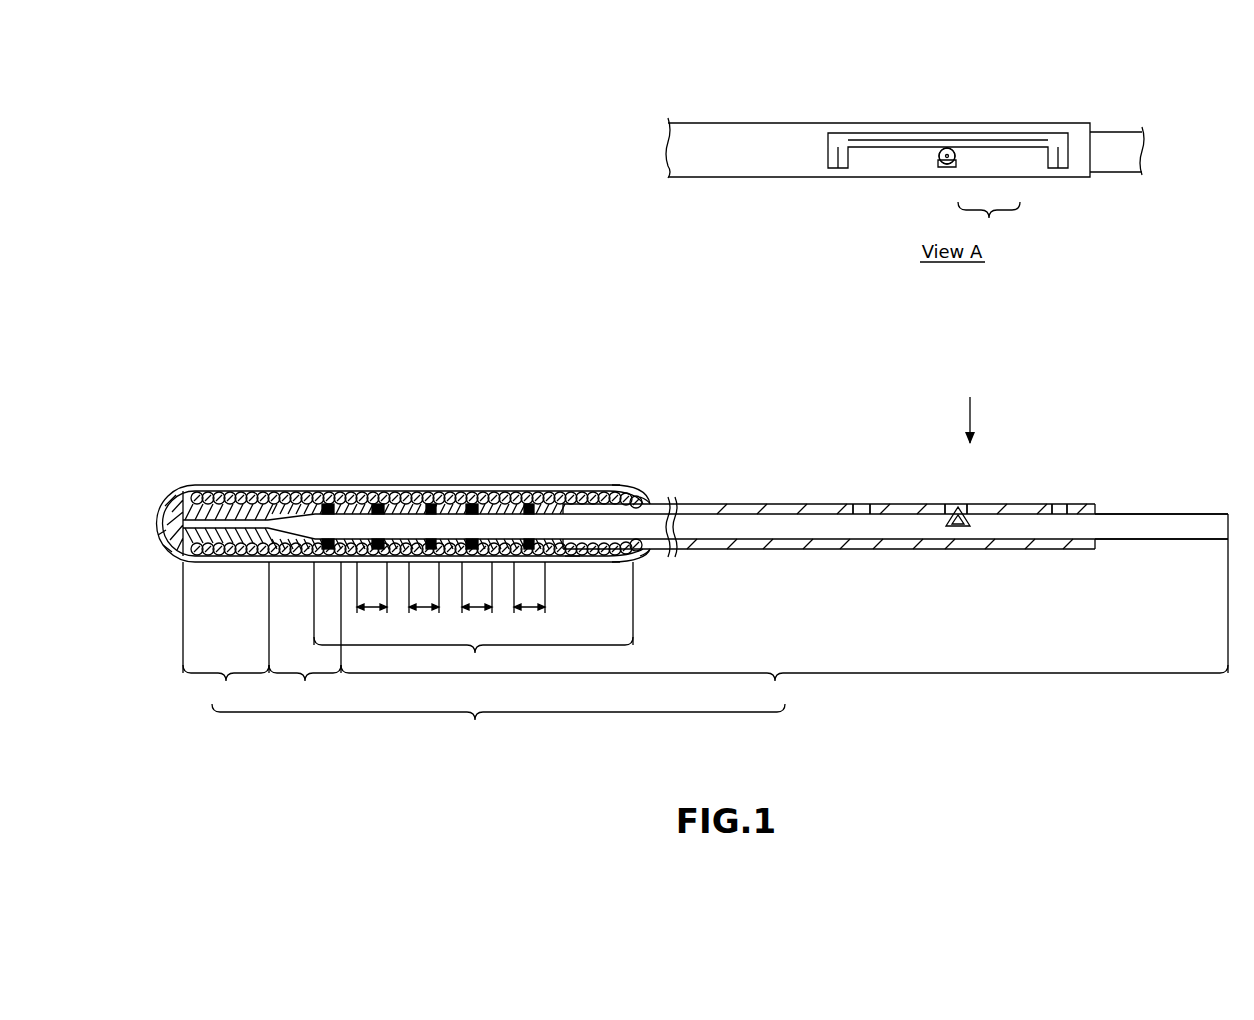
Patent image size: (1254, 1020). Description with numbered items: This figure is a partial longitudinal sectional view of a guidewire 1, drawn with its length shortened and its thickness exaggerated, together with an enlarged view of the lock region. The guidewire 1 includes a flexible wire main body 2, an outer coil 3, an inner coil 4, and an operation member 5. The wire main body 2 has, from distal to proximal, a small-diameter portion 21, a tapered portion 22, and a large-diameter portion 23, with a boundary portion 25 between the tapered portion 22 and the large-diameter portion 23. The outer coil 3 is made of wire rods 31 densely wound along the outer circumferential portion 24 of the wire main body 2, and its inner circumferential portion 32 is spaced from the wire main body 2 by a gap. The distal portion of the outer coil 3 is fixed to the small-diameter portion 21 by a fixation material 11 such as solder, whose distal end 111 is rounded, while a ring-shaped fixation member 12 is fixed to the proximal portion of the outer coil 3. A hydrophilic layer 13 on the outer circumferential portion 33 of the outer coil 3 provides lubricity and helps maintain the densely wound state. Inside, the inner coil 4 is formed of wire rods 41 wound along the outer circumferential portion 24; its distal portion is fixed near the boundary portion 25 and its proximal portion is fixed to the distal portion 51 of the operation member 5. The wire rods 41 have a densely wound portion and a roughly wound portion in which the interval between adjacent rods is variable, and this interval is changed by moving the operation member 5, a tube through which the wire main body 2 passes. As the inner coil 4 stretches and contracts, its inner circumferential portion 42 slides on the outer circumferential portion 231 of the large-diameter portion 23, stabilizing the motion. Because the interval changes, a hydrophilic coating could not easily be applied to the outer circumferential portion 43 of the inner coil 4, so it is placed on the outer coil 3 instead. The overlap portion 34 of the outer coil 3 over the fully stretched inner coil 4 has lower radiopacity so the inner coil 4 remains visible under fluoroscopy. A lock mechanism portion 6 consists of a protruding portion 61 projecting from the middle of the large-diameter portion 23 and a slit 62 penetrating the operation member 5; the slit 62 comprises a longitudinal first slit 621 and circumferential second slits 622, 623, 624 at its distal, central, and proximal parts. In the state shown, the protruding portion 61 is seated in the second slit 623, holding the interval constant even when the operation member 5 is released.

The guidewire 1 is at (1090, 388).
The wire main body 2 is at (1146, 92).
The outer coil 3 is at (563, 484).
The inner coil 4 is at (493, 490).
The operation member 5 is at (1090, 503).
The lock mechanism portion 6 is at (1015, 451).
The fixation material 11 is at (183, 497).
The fixation member 12 is at (636, 498).
The hydrophilic layer 13 is at (606, 490).
The small-diameter portion 21 is at (226, 632).
The tapered portion 22 is at (305, 684).
The large-diameter portion 23 is at (784, 601).
The outer circumferential portion of the wire main body 24 is at (524, 492).
The boundary portion 25 is at (338, 562).
The wire rods of the outer coil 31 is at (246, 490).
The inner circumferential portion of the outer coil 32 is at (300, 492).
The outer circumferential portion of the outer coil 33 is at (346, 492).
The overlap portion 34 is at (473, 618).
The wire rods of the inner coil 41 is at (382, 490).
The inner circumferential portion of the inner coil 42 is at (376, 514).
The outer circumferential portion of the inner coil 43 is at (427, 492).
The distal portion of the operation member 51 is at (573, 563).
The protruding portion 61 is at (958, 530).
The slit 62 is at (1000, 148).
The distal end of the fixation material 111 is at (168, 512).
The outer circumferential portion of the large-diameter portion 231 is at (462, 514).
The first slit 621 is at (905, 140).
The second slit 622 is at (857, 504).
The second slit 623 is at (955, 505).
The second slit 624 is at (1058, 505).